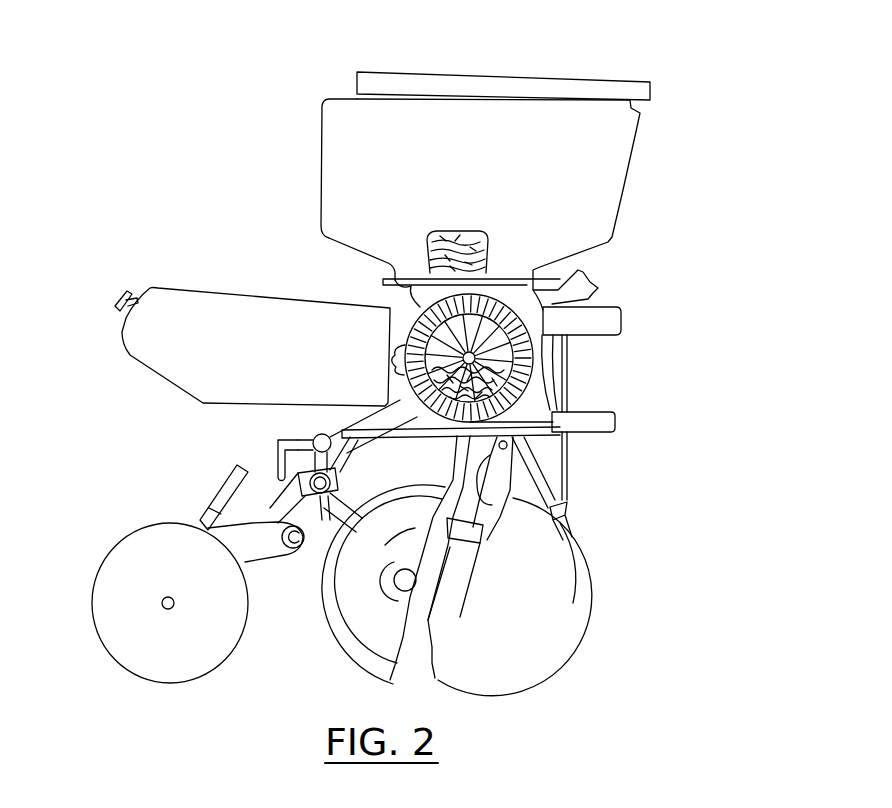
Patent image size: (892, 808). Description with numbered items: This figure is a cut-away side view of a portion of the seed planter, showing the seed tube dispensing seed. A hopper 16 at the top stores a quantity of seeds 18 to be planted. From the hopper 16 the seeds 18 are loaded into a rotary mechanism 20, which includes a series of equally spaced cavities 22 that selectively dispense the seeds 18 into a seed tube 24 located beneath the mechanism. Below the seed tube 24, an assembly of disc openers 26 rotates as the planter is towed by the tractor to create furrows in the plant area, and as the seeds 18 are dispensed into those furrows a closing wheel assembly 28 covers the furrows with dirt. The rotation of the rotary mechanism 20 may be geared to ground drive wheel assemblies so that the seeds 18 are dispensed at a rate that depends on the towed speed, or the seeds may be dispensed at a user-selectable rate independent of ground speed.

The hopper 16 is at (317, 177).
The seeds 18 is at (460, 230).
The rotary mechanism 20 is at (411, 285).
The cavities 22 is at (533, 357).
The seed tube 24 is at (462, 582).
The disc openers 26 is at (537, 632).
The closing wheel assembly 28 is at (217, 650).